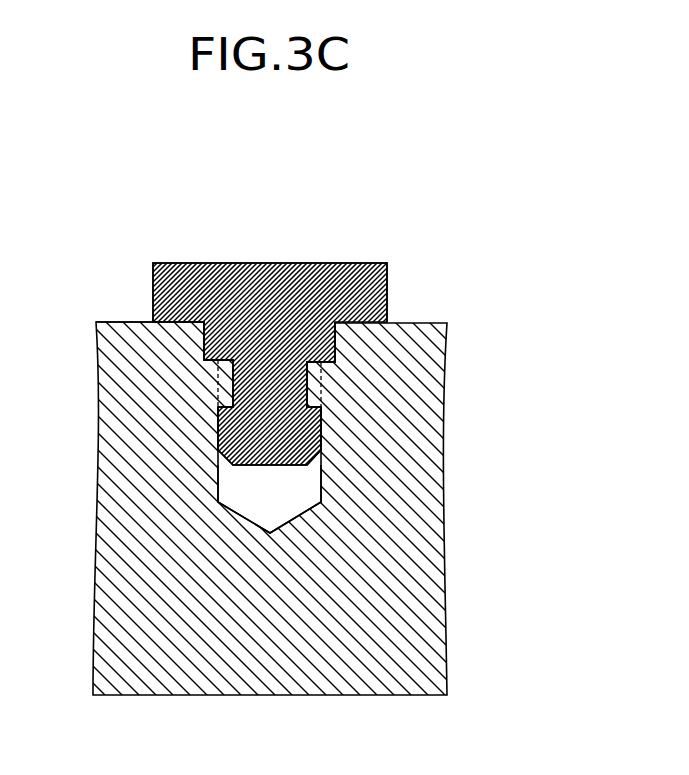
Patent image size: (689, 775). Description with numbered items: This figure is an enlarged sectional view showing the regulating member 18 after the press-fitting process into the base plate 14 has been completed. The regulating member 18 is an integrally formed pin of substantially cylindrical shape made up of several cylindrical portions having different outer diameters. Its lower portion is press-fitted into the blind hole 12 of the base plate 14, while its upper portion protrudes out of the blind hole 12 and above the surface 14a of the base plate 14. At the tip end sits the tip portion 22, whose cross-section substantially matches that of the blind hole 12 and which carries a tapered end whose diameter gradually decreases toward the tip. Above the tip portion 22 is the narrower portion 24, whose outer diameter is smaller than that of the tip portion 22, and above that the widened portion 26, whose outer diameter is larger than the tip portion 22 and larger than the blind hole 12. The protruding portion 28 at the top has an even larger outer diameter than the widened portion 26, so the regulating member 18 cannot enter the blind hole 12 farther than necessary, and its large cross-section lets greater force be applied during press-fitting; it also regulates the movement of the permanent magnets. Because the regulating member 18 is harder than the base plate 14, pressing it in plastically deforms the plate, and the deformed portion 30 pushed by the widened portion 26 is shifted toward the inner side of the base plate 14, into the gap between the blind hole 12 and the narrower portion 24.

The blind hole 12 is at (218, 492).
The base plate 14 is at (437, 600).
The surface of the base plate 14a is at (122, 322).
The regulating member 18 is at (385, 222).
The tip portion 22 is at (322, 428).
The narrower portion 24 is at (232, 380).
The widened portion 26 is at (335, 342).
The protruding portion 28 is at (388, 286).
The deformed portion 30 is at (322, 385).